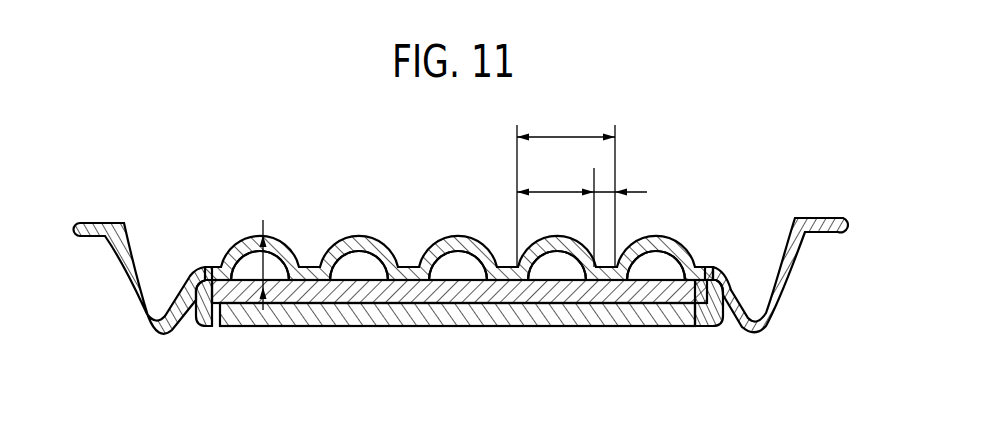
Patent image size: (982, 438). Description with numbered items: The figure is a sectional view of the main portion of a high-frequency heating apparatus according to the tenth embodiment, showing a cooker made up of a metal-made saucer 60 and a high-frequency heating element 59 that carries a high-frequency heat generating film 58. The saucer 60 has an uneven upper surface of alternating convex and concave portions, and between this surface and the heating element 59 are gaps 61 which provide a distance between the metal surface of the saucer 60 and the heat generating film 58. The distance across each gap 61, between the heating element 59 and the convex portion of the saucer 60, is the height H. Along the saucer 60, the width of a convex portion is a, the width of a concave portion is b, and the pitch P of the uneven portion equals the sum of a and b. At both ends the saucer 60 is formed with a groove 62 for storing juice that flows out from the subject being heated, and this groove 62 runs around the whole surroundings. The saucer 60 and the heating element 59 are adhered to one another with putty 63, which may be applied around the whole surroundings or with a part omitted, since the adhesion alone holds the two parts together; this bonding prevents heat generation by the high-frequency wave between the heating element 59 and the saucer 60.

The high-frequency heat generating film 58 is at (482, 314).
The high-frequency heating element 59 is at (696, 277).
The metal-made saucer 60 is at (405, 262).
The gaps 61 is at (369, 258).
The groove 62 is at (163, 295).
The putty 63 is at (214, 328).
The height H is at (259, 233).
The pitch P is at (566, 188).
The width of convex portion a is at (555, 217).
The width of concave portion b is at (620, 182).